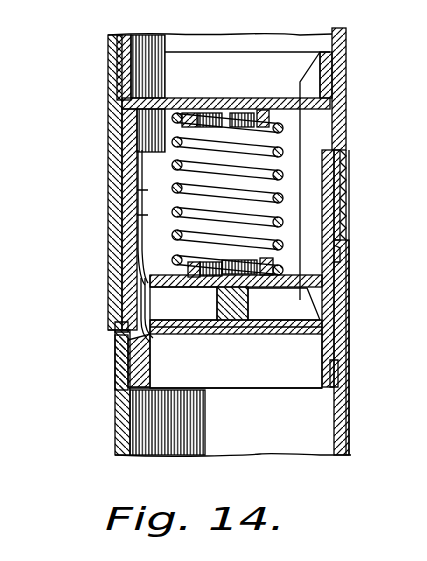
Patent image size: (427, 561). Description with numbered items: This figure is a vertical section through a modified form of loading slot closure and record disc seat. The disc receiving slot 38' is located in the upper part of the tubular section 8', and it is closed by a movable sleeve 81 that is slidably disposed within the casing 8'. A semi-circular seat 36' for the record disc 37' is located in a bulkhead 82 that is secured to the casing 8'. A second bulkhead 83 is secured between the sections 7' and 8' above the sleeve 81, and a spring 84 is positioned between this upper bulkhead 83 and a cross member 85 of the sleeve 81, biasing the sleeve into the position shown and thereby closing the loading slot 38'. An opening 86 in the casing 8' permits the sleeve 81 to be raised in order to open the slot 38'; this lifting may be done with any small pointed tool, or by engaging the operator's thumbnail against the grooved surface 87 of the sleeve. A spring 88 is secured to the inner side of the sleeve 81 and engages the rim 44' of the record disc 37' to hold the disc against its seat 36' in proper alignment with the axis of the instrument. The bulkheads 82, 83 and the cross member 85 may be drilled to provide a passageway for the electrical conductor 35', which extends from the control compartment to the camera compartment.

The section 7' is at (224, 167).
The tubular section 8' is at (228, 245).
The electrical conductor 35' is at (364, 241).
The second bulkhead 83 is at (118, 121).
The spring 84 is at (110, 175).
The cross member 85 is at (160, 273).
The spring 88 is at (113, 292).
The movable sleeve 81 is at (113, 323).
The disc receiving slot 38' is at (106, 362).
The grooved surface 87 is at (343, 208).
The opening 86 is at (346, 162).
The semi-circular seat 36' is at (274, 305).
The bulkhead 82 is at (270, 320).
The rim 44' is at (236, 320).
The record disc 37' is at (226, 394).